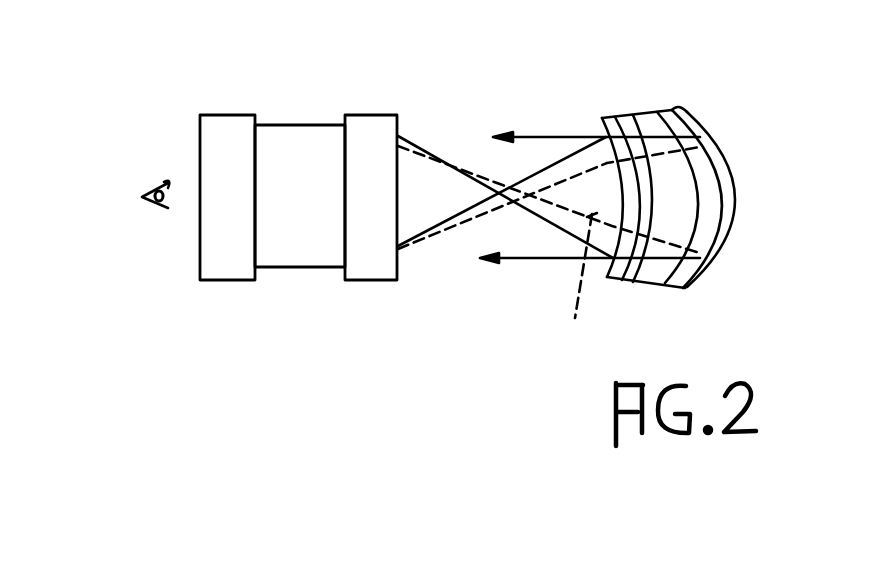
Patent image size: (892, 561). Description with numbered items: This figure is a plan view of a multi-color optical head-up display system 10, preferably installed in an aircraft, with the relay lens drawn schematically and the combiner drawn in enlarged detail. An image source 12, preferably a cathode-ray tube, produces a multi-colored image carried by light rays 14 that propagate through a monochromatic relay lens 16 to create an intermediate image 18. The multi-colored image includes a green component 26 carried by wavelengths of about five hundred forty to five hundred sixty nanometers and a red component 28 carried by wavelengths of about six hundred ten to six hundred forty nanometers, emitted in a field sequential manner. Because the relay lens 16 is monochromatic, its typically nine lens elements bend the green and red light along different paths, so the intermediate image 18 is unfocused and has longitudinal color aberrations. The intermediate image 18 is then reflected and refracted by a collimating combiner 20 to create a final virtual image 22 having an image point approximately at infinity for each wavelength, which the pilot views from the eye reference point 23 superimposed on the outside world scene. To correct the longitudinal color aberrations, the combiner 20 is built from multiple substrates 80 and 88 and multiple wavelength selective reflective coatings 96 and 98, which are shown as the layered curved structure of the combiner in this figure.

The head-up display system 10 is at (448, 77).
The image source 12 is at (215, 123).
The light rays 14 is at (312, 124).
The monochromatic relay lens 16 is at (378, 123).
The intermediate image 18 is at (483, 217).
The collimating combiner 20 is at (668, 196).
The final virtual image 22 is at (503, 260).
The eye reference point 23 is at (158, 187).
The green component 26 is at (543, 175).
The red component 28 is at (575, 286).
The substrate 80 is at (611, 118).
The substrate 88 is at (688, 110).
The wavelength selective reflective coating 96 is at (645, 114).
The wavelength selective reflective coating 98 is at (710, 163).